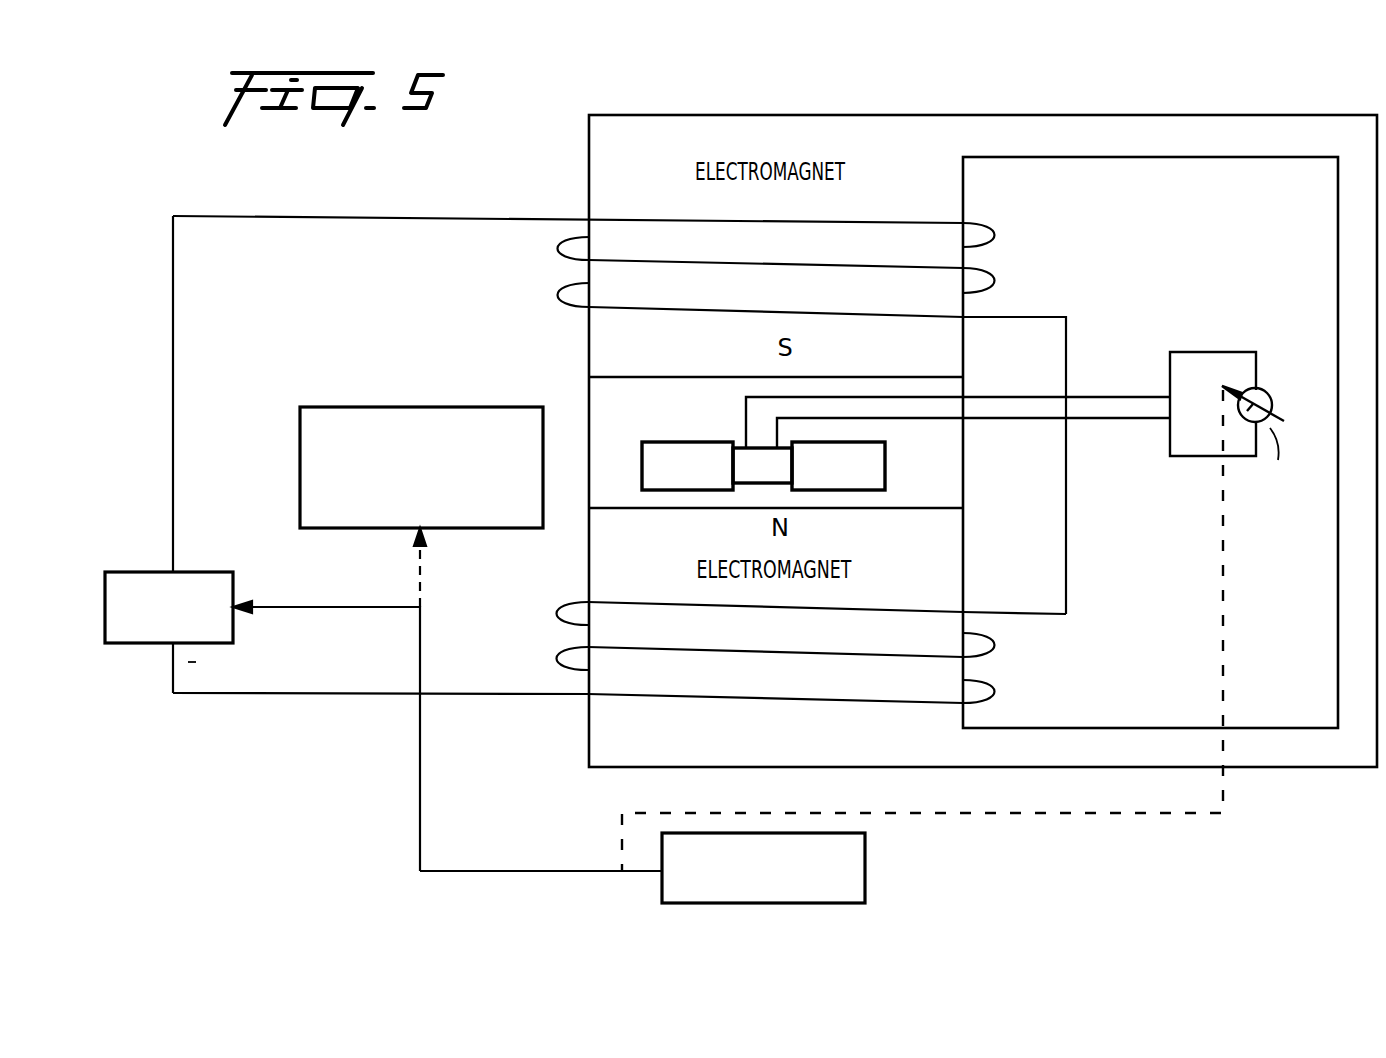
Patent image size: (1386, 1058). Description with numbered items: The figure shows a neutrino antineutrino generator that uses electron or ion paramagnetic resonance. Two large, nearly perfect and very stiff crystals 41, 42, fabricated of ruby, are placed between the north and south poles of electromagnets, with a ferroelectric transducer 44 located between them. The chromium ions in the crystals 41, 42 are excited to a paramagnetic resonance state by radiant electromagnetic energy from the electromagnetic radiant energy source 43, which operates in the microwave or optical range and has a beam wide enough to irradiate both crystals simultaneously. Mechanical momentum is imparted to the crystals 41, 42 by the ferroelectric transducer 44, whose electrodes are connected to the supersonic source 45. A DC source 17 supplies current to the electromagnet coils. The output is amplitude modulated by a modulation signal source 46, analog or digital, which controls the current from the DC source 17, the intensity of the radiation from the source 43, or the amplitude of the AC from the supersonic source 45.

The DC source 17 is at (139, 576).
The crystal 41 is at (666, 447).
The crystal 42 is at (877, 470).
The electromagnetic radiant energy source 43 is at (397, 413).
The ferroelectric transducer 44 is at (742, 448).
The supersonic source 45 is at (1268, 393).
The modulation signal source 46 is at (852, 868).